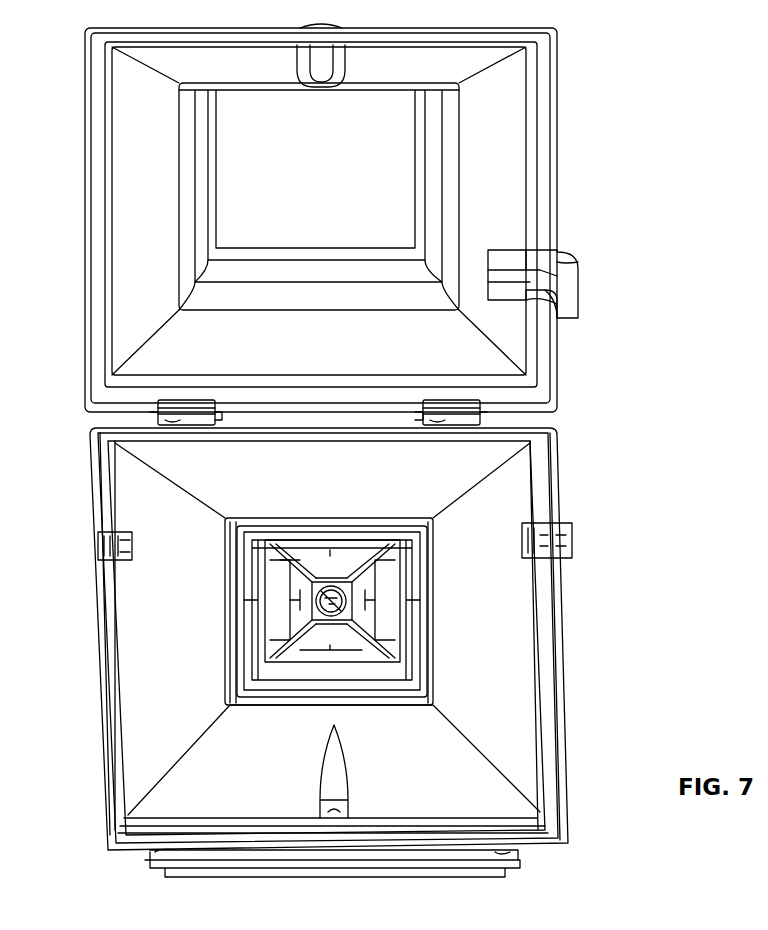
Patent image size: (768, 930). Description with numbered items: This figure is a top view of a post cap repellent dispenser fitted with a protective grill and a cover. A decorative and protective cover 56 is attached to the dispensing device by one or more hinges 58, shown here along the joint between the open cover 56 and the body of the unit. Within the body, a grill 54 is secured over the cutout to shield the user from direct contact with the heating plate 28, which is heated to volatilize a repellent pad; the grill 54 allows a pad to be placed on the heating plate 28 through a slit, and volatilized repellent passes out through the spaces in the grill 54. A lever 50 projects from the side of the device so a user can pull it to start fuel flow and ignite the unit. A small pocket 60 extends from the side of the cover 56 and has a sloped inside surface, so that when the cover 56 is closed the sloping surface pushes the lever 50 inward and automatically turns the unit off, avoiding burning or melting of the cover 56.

The cover 56 is at (542, 165).
The pocket 60 is at (580, 268).
The hinges 58 is at (560, 418).
The lever 50 is at (575, 527).
The heating plate 28 is at (360, 597).
The grill 54 is at (390, 652).